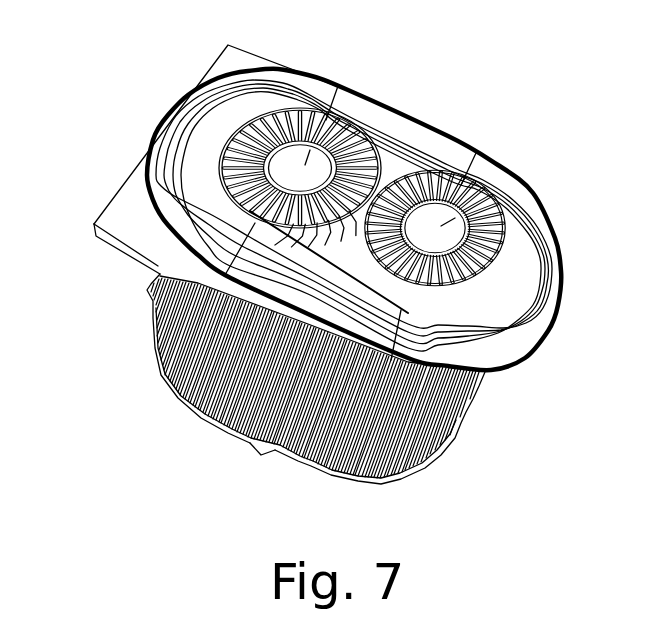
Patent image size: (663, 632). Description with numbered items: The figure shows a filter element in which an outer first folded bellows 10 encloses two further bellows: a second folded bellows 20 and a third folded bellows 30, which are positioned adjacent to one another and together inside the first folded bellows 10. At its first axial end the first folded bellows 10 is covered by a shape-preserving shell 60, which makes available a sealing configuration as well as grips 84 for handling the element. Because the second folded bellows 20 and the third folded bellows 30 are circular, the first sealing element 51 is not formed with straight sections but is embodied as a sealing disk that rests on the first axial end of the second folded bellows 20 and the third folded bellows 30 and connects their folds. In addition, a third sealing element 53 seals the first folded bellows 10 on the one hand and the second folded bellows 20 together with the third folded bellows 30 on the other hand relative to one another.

The first folded bellows 10 is at (463, 402).
The second folded bellows 20 is at (412, 120).
The third folded bellows 30 is at (473, 173).
The first sealing element 51 is at (333, 103).
The third sealing element 53 is at (323, 472).
The shape-preserving shell 60 is at (460, 123).
The grips 84 is at (224, 52).